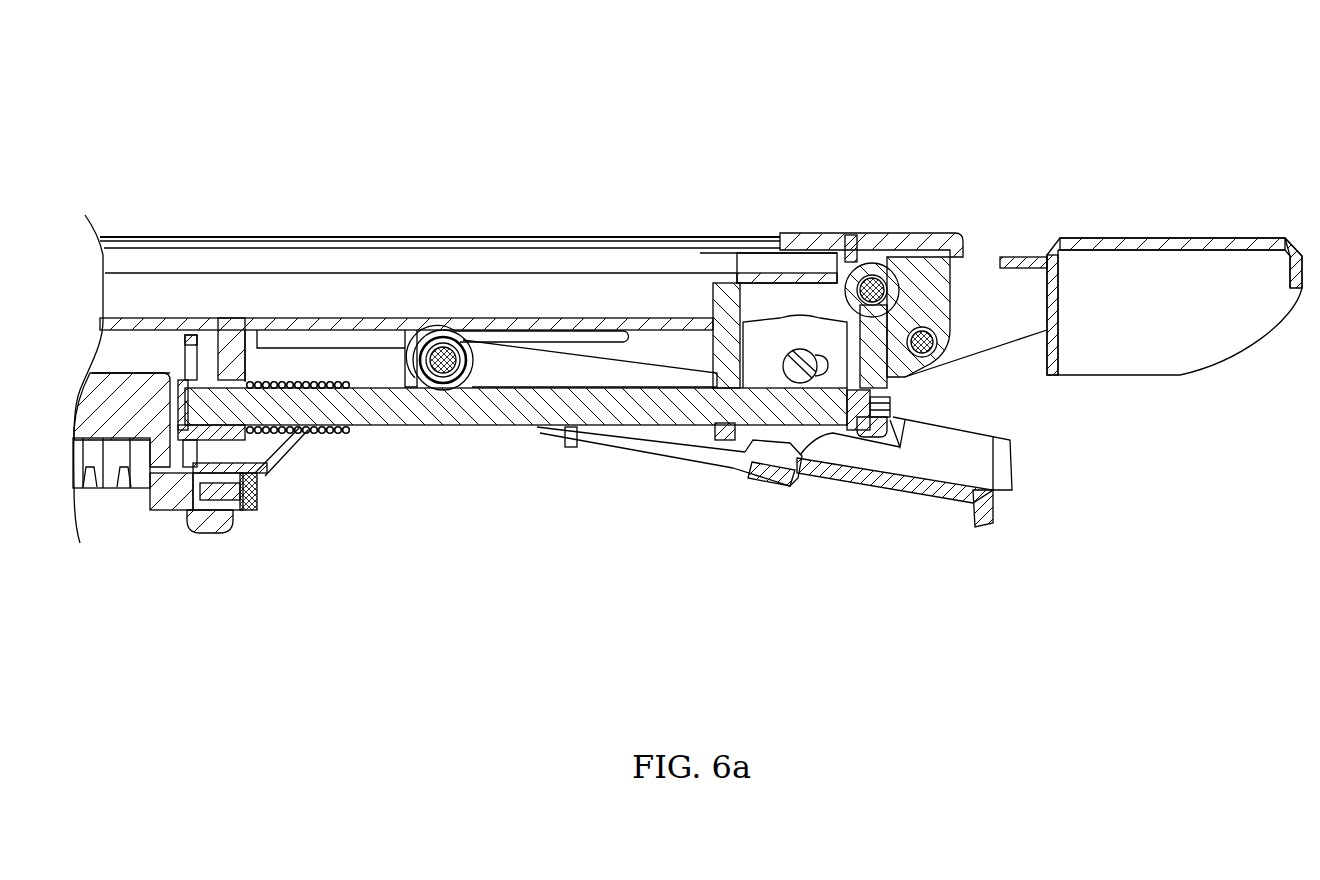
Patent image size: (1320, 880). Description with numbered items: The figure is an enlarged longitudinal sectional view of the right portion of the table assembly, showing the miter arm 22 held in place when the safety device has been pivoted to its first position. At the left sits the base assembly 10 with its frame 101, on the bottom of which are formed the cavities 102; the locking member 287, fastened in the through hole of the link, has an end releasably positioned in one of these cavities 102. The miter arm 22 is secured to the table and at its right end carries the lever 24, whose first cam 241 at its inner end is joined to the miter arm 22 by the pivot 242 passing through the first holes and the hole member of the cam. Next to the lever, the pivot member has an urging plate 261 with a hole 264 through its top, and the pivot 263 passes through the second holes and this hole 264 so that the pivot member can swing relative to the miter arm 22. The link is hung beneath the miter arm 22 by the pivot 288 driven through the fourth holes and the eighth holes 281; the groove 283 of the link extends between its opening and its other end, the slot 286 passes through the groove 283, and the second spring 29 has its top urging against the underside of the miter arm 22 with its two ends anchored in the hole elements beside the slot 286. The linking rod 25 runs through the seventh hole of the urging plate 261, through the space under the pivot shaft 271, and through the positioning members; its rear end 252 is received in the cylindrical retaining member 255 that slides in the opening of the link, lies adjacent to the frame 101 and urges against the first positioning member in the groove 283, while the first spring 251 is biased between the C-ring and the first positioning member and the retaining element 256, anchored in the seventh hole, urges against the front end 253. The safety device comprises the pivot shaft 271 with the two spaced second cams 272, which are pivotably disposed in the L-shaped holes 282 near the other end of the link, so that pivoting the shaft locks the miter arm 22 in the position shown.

The base assembly 10 is at (113, 413).
The frame 101 is at (140, 373).
The cavities 102 is at (152, 470).
The locking member 287 is at (158, 505).
The miter arm 22 is at (557, 297).
The lever 24 is at (1127, 290).
The linking rod 25 is at (433, 410).
The second spring 29 is at (466, 332).
The first spring 251 is at (307, 380).
The rear end 252 is at (224, 340).
The front end 253 is at (808, 425).
The retaining member 255 is at (193, 335).
The retaining element 256 is at (895, 398).
The urging plate 261 is at (900, 290).
The first cam 241 is at (936, 226).
The pivot 242 is at (955, 318).
The pivot 263 is at (857, 235).
The hole 264 is at (838, 188).
The pivot shaft 271 is at (800, 363).
The eighth holes 281 is at (516, 224).
The pivot 288 is at (404, 333).
The L-shaped holes 282 is at (832, 408).
The second cams 272 is at (872, 497).
The groove 283 is at (537, 367).
The slot 286 is at (613, 437).